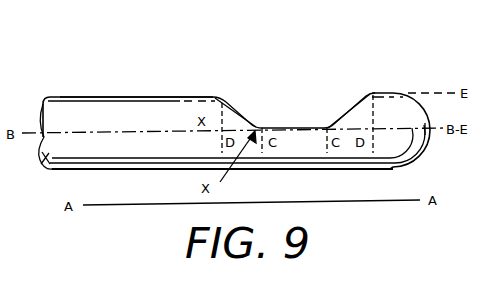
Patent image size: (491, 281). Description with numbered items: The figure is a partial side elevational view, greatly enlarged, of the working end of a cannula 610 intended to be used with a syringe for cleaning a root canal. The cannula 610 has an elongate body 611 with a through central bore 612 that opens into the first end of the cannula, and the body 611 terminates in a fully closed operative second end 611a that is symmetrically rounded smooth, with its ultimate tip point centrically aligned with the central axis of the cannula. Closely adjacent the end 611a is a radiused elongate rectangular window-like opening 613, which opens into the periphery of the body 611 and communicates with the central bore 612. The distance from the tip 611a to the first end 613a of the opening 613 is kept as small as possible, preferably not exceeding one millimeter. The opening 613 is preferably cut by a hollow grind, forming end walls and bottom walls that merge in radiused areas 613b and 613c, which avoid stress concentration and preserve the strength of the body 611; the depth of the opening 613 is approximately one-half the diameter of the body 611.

The cannula 610 is at (197, 89).
The elongate body 611 is at (108, 110).
The closed second end 611a is at (429, 133).
The central bore 612 is at (44, 152).
The window-like opening 613 is at (295, 125).
The first end of the opening 613a is at (372, 93).
The radiused area 613b is at (330, 128).
The radiused area 613c is at (258, 128).